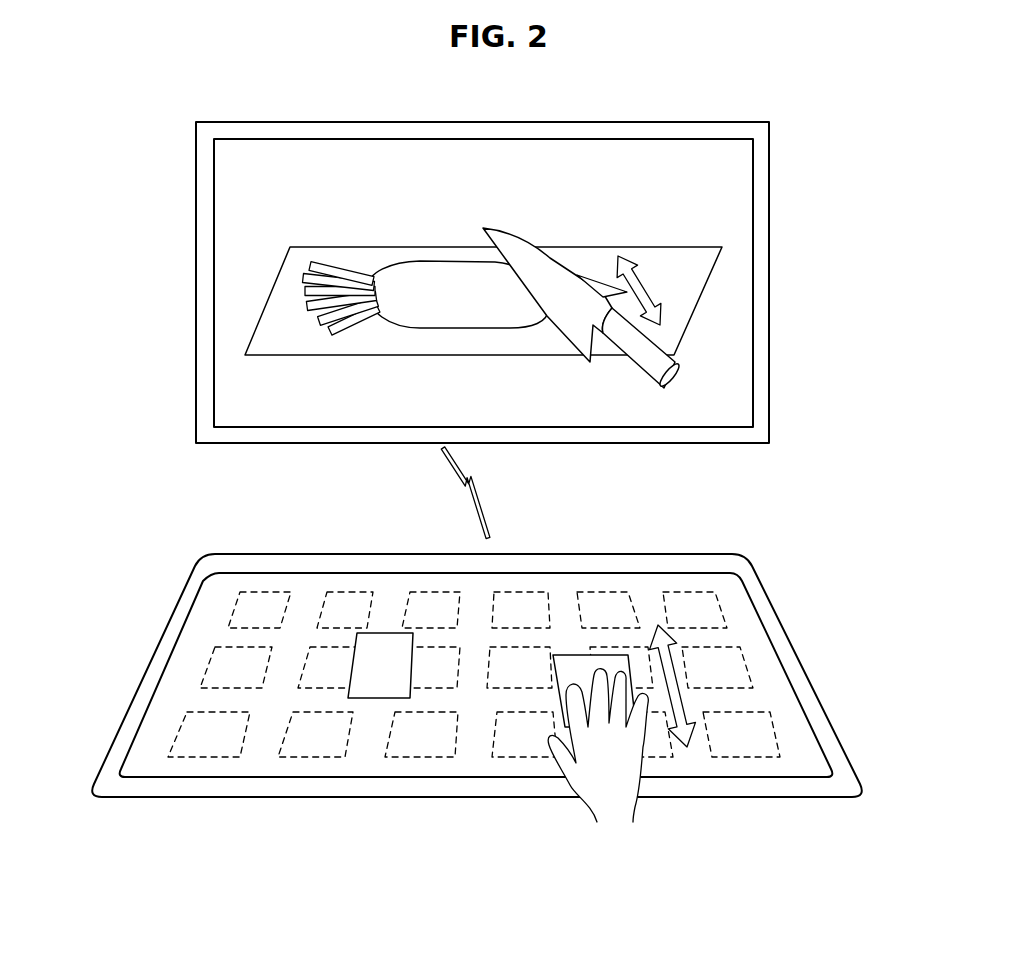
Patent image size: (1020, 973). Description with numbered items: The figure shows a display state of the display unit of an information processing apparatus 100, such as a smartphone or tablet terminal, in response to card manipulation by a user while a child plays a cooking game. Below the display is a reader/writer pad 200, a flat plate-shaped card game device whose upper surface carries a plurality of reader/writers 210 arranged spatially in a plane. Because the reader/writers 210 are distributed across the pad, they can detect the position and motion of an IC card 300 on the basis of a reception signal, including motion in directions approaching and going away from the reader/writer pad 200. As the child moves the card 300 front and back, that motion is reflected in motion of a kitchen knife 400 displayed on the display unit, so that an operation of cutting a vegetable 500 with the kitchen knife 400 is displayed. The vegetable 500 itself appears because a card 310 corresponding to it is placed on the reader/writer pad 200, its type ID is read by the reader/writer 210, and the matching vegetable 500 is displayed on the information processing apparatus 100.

The information processing apparatus 100 is at (769, 281).
The reader/writer pad 200 is at (795, 673).
The reader/writer 210 is at (347, 592).
The IC card 300 is at (560, 690).
The card 310 is at (377, 698).
The kitchen knife 400 is at (662, 383).
The vegetable 500 is at (530, 323).